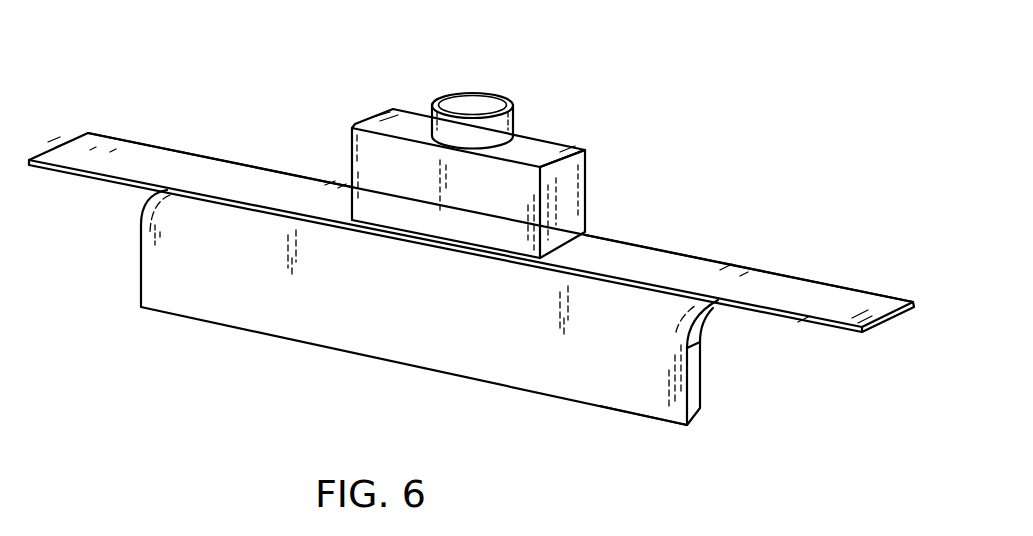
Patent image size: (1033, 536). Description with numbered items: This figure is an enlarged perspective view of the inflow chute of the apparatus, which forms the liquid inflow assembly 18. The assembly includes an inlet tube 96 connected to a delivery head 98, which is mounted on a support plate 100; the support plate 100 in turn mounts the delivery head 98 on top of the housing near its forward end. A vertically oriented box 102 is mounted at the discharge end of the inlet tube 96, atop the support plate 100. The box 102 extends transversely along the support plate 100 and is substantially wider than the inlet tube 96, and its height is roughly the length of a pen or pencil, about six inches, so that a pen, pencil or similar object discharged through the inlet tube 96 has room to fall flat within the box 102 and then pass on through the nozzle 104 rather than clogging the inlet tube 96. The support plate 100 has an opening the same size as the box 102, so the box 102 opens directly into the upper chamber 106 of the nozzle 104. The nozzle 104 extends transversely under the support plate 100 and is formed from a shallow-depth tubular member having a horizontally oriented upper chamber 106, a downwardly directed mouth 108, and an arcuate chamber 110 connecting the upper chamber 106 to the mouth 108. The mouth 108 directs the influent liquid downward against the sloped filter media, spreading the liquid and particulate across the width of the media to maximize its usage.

The liquid inflow assembly 18 is at (633, 158).
The inlet tube 96 is at (503, 123).
The delivery head 98 is at (603, 208).
The support plate 100 is at (828, 293).
The box 102 is at (370, 167).
The nozzle 104 is at (225, 262).
The upper chamber 106 is at (720, 313).
The mouth 108 is at (667, 410).
The arcuate chamber 110 is at (700, 352).